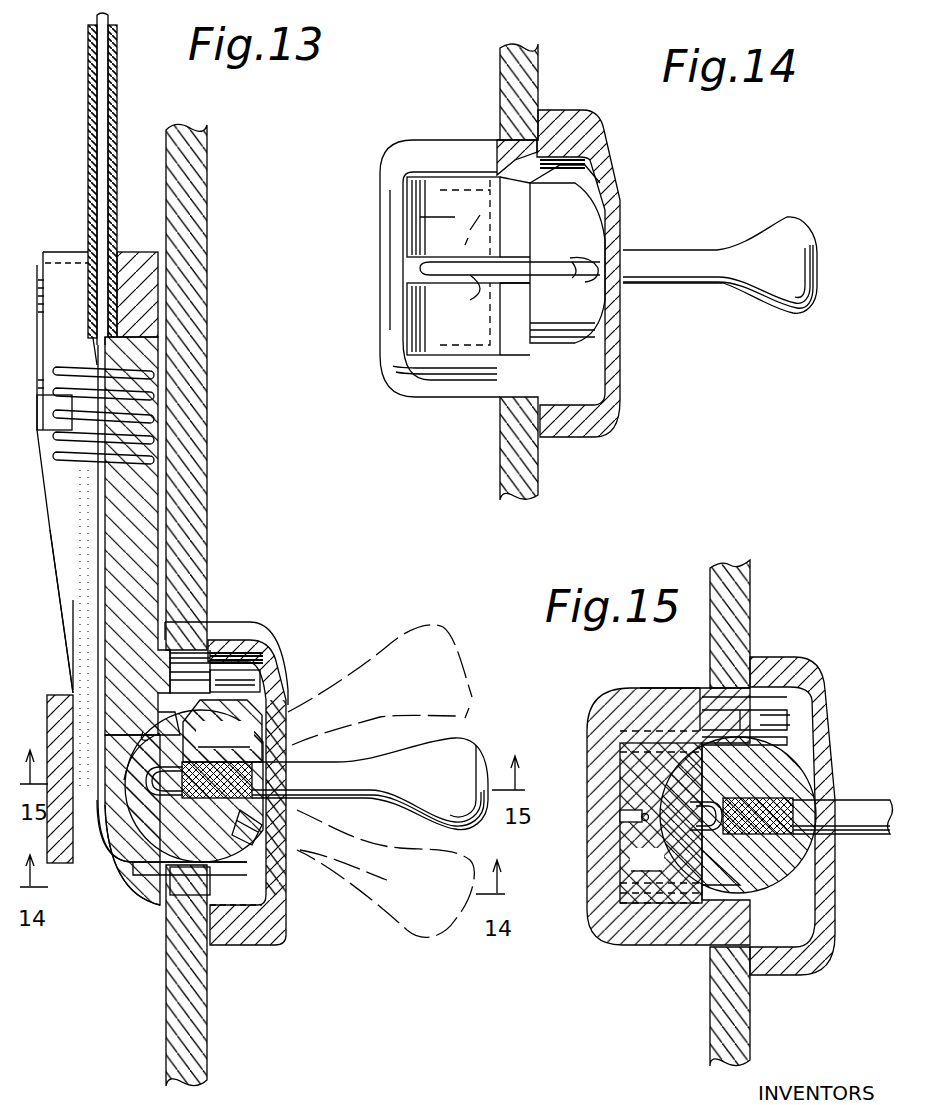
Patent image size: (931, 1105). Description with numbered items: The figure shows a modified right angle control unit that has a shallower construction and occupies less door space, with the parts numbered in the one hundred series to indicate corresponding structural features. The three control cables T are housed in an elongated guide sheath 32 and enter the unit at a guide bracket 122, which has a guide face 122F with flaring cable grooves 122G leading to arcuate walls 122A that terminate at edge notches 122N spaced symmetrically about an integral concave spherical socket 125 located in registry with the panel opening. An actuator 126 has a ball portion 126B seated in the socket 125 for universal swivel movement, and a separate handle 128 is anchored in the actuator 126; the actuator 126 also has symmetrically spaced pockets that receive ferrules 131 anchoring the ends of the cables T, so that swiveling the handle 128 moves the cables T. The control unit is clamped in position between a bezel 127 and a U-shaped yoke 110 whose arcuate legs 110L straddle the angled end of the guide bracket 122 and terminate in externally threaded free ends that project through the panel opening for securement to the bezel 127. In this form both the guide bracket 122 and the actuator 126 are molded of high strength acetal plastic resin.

In FIG. 13, the guide sheath 32 is at (115, 98).
In FIG. 13, the panel plate P is at (192, 443).
In FIG. 14, the panel plate P is at (530, 80).
In FIG. 15, the panel plate P is at (746, 605).
In FIG. 13, the control cables T is at (95, 545).
In FIG. 13, the U-shaped yoke 110 is at (48, 720).
In FIG. 14, the U-shaped yoke 110 is at (393, 160).
In FIG. 15, the U-shaped yoke 110 is at (596, 722).
In FIG. 14, the arcuate legs 110L is at (467, 145).
In FIG. 15, the arcuate legs 110L is at (652, 697).
In FIG. 13, the guide bracket 122 is at (172, 525).
In FIG. 14, the guide bracket 122 is at (453, 217).
In FIG. 15, the guide bracket 122 is at (661, 817).
In FIG. 13, the arcuate walls 122A is at (113, 852).
In FIG. 13, the guide face 122F is at (62, 553).
In FIG. 14, the guide face 122F is at (392, 232).
In FIG. 15, the guide face 122F is at (590, 880).
In FIG. 13, the flaring cable grooves 122G is at (76, 629).
In FIG. 13, the edge notches 122N is at (158, 870).
In FIG. 14, the edge notches 122N is at (468, 315).
In FIG. 15, the edge notches 122N is at (607, 823).
In FIG. 13, the concave spherical socket 125 is at (145, 728).
In FIG. 13, the actuator 126 is at (258, 700).
In FIG. 14, the actuator 126 is at (612, 232).
In FIG. 15, the actuator 126 is at (820, 745).
In FIG. 13, the ball portion 126B is at (222, 731).
In FIG. 15, the ball portion 126B is at (660, 868).
In FIG. 13, the bezel 127 is at (262, 640).
In FIG. 14, the bezel 127 is at (600, 118).
In FIG. 15, the bezel 127 is at (737, 816).
In FIG. 13, the handle 128 is at (392, 748).
In FIG. 14, the handle 128 is at (790, 225).
In FIG. 15, the handle 128 is at (860, 803).
In FIG. 13, the ferrules 131 is at (250, 835).
In FIG. 14, the ferrules 131 is at (608, 288).